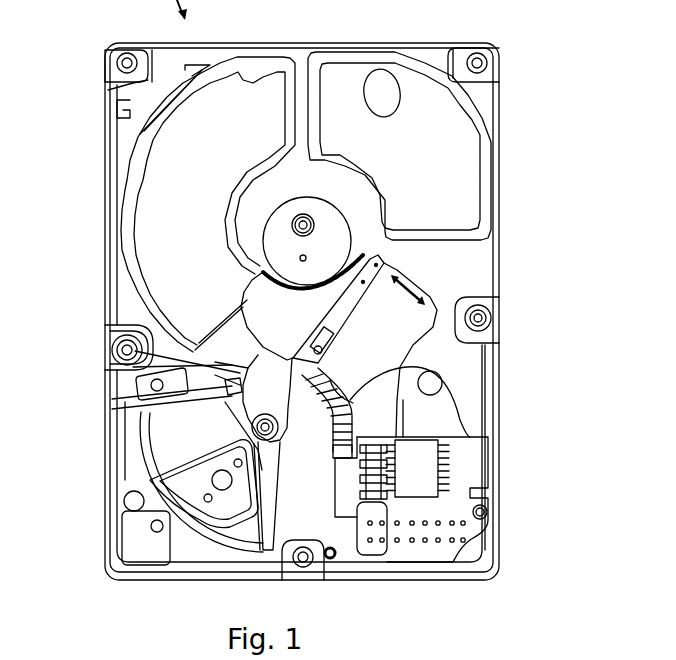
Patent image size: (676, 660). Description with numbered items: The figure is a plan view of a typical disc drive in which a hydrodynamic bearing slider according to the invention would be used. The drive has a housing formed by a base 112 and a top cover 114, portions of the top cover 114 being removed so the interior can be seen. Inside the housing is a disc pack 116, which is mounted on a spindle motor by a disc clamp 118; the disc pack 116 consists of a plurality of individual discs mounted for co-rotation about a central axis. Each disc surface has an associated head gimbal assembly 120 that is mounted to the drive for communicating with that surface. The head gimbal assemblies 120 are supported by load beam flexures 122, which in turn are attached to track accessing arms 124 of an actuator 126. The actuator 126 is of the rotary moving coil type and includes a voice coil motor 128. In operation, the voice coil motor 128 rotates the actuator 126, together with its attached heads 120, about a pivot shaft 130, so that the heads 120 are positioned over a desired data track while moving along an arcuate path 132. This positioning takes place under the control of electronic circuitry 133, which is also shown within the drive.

The base 112 is at (503, 514).
The top cover 114 is at (300, 47).
The disc pack 116 is at (488, 437).
The disc clamp 118 is at (330, 225).
The head gimbal assembly 120 is at (378, 268).
The load beam flexure 122 is at (347, 317).
The track accessing arm 124 is at (300, 369).
The actuator 126 is at (117, 350).
The voice coil motor 128 is at (141, 454).
The pivot shaft 130 is at (266, 432).
The arcuate path 132 is at (420, 287).
The electronic circuitry 133 is at (418, 553).